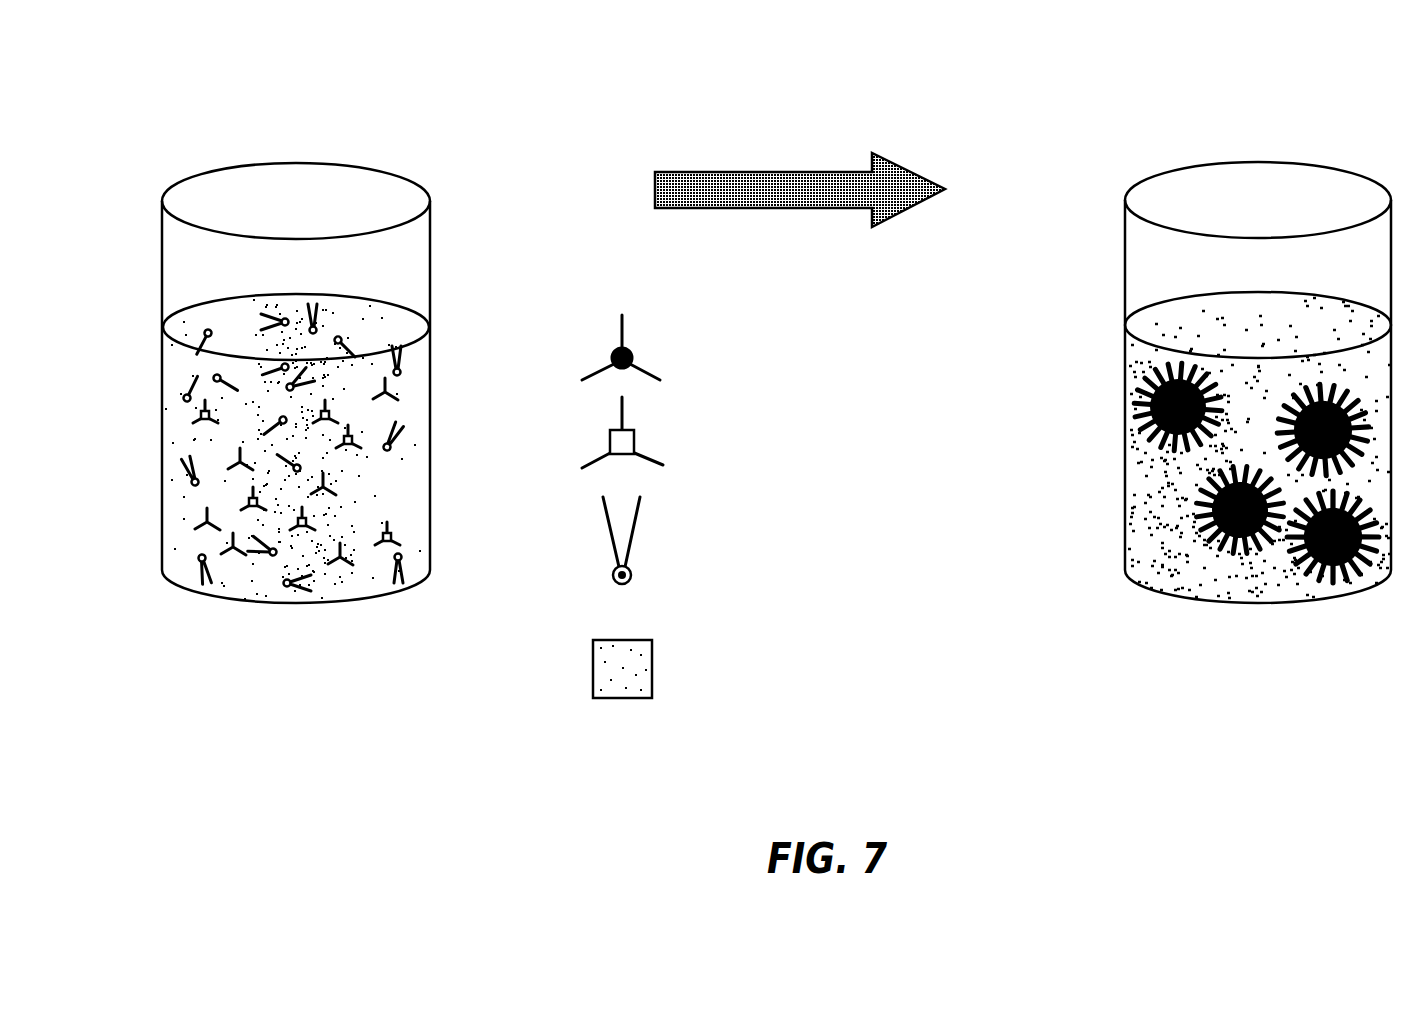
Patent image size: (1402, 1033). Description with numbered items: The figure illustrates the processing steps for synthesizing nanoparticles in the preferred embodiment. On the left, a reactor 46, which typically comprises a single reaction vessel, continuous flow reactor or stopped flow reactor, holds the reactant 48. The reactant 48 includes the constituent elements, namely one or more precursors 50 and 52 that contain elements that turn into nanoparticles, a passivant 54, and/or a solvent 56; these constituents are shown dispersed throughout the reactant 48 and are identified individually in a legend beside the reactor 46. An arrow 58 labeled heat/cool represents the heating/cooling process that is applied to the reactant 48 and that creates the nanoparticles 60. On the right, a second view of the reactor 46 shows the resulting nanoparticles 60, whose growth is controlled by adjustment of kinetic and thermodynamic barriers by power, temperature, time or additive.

The reactor 46 is at (283, 160).
The reactant 48 is at (163, 325).
The precursor 50 is at (407, 385).
The precursor 52 is at (407, 515).
The passivant 54 is at (407, 557).
The solvent 56 is at (360, 592).
The arrow 58 is at (800, 180).
The nanoparticles 60 is at (1333, 383).